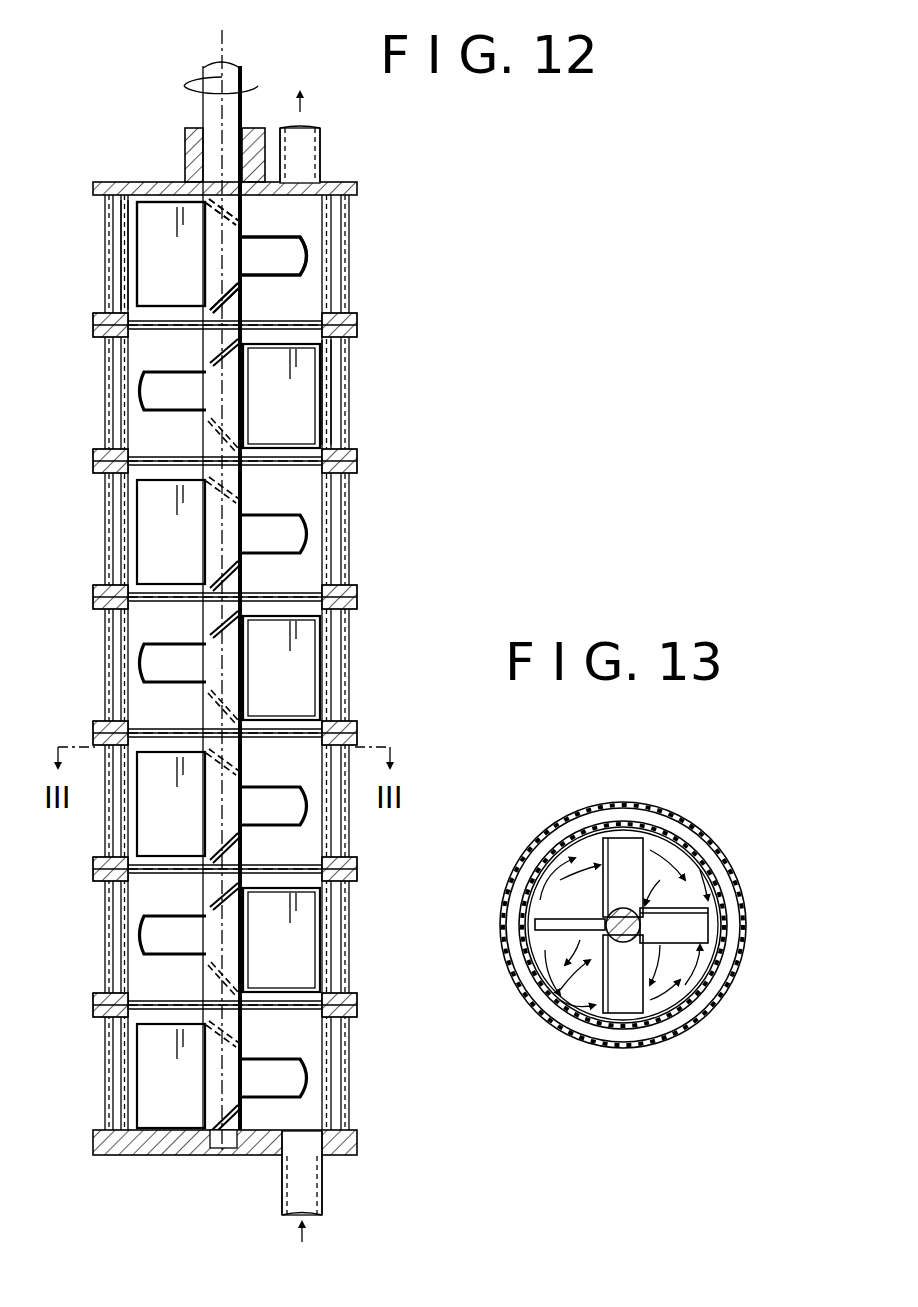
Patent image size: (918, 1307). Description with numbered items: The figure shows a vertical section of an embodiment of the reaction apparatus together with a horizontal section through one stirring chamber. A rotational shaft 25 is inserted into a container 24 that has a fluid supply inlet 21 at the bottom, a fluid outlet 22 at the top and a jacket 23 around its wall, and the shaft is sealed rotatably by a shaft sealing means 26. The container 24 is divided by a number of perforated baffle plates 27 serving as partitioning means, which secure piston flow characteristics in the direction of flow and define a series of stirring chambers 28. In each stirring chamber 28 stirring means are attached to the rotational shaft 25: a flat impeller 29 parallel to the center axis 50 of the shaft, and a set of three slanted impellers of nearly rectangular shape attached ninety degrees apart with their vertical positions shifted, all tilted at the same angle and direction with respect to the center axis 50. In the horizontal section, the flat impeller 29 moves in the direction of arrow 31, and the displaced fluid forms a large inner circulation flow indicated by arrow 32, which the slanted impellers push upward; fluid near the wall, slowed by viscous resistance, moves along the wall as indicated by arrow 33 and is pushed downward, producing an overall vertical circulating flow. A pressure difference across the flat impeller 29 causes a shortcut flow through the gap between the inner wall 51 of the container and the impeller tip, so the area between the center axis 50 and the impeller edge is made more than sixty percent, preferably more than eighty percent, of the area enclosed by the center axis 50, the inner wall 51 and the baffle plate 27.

In FIG. 12, the fluid supply inlet 21 is at (282, 1196).
In FIG. 12, the fluid outlet 22 is at (306, 126).
In FIG. 12, the jacket 23 is at (342, 530).
In FIG. 13, the jacket 23 is at (665, 810).
In FIG. 12, the container 24 is at (331, 490).
In FIG. 13, the container 24 is at (700, 824).
In FIG. 12, the rotational shaft 25 is at (250, 80).
In FIG. 13, the rotational shaft 25 is at (640, 912).
In FIG. 12, the shaft sealing means 26 is at (190, 162).
In FIG. 12, the baffle plate 27 is at (160, 338).
In FIG. 12, the stirring chamber 28 is at (128, 245).
In FIG. 12, the flat impeller 29 is at (148, 280).
In FIG. 13, the flat impeller 29 is at (548, 920).
In FIG. 13, the arrow 31 is at (525, 948).
In FIG. 13, the arrow 32 is at (578, 962).
In FIG. 13, the arrow 33 is at (662, 1005).
In FIG. 12, the center axis 50 is at (232, 40).
In FIG. 12, the inner wall 51 is at (324, 378).